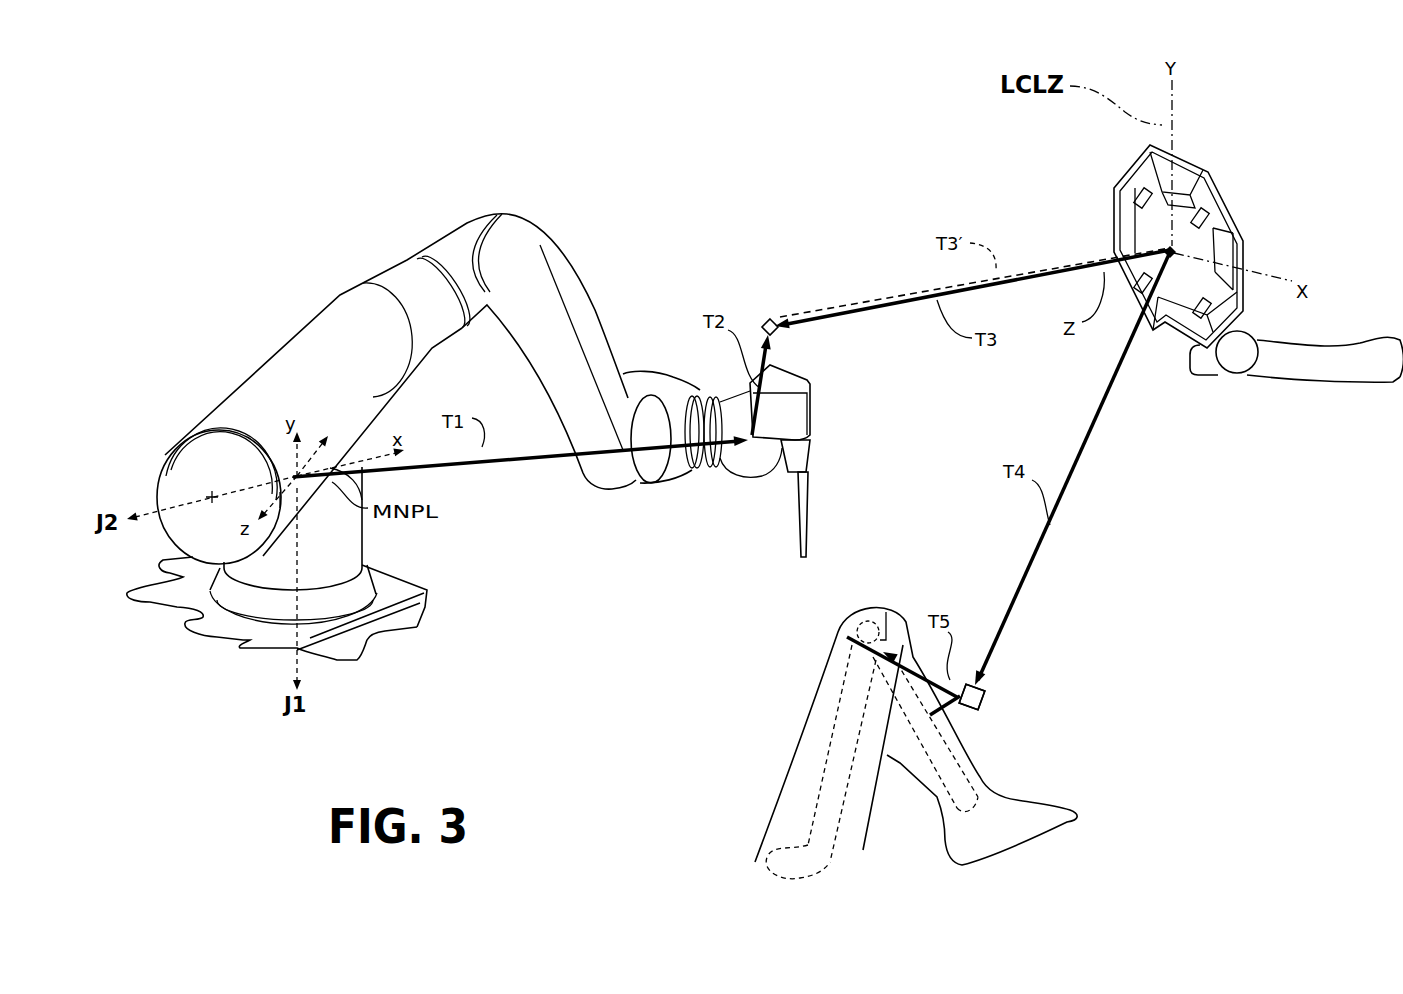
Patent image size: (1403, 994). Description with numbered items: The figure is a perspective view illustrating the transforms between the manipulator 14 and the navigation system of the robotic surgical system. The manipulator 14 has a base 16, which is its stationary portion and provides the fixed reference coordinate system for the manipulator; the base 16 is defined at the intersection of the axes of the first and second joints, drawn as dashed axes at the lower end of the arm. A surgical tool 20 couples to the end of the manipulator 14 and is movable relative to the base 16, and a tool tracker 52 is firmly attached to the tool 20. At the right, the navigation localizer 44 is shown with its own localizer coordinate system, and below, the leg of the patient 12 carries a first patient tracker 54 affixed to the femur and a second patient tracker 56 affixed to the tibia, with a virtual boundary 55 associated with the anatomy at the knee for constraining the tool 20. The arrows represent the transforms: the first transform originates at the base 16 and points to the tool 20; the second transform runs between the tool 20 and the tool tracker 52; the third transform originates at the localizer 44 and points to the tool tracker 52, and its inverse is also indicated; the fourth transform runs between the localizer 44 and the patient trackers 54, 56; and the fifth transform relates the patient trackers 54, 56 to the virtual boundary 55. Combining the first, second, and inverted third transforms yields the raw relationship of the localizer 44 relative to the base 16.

The patient 12 is at (1050, 803).
The manipulator 14 is at (592, 230).
The base 16 is at (270, 440).
The surgical tool 20 is at (813, 410).
The navigation localizer 44 is at (1232, 177).
The tool tracker 52 is at (766, 318).
The first patient tracker 54 is at (988, 702).
The virtual boundary 55 is at (886, 612).
The second patient tracker 56 is at (972, 697).